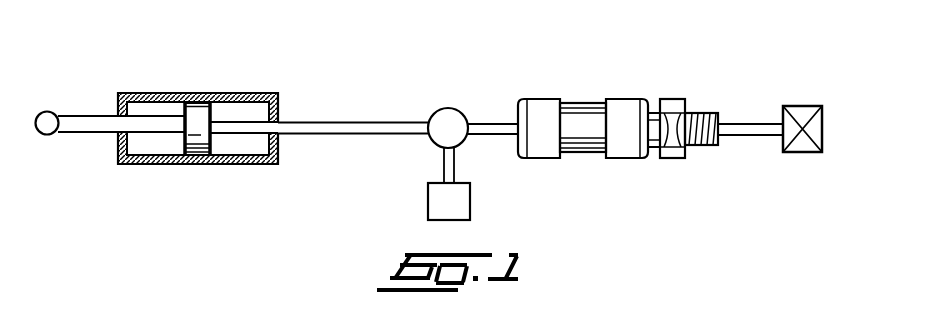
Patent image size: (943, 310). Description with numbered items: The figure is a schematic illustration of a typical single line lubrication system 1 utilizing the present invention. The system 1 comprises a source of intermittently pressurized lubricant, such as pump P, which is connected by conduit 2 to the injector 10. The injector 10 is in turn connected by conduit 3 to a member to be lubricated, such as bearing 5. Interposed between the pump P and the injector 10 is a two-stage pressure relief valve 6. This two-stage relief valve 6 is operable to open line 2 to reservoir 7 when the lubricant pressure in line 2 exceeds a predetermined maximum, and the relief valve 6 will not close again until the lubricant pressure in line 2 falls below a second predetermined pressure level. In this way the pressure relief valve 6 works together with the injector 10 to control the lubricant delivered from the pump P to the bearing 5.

The pump P is at (200, 87).
The single line lubrication system 1 is at (353, 95).
The conduit 2 is at (378, 137).
The conduit 3 is at (750, 137).
The bearing 5 is at (802, 106).
The two-stage pressure relief valve 6 is at (451, 108).
The reservoir 7 is at (470, 205).
The injector 10 is at (584, 100).